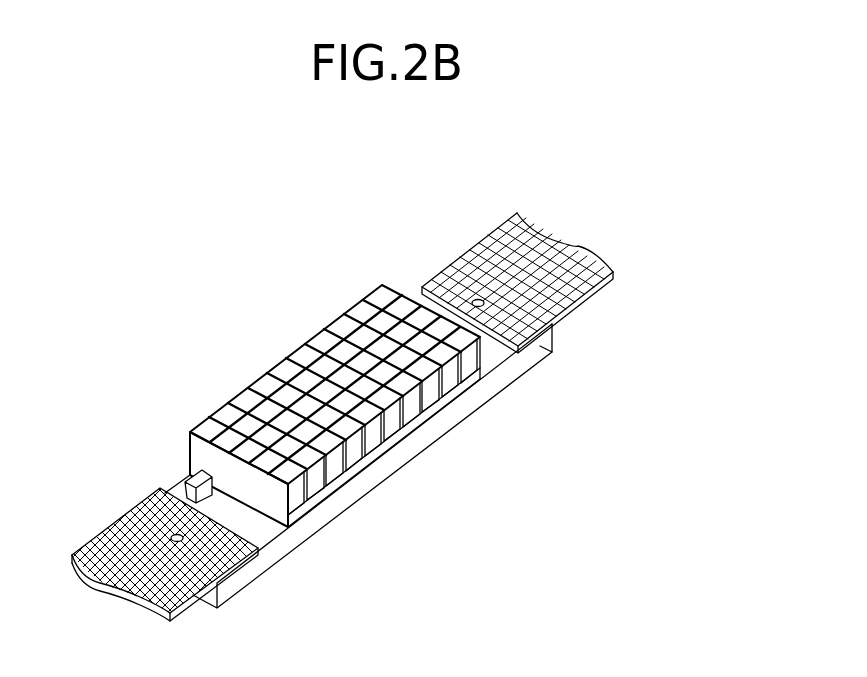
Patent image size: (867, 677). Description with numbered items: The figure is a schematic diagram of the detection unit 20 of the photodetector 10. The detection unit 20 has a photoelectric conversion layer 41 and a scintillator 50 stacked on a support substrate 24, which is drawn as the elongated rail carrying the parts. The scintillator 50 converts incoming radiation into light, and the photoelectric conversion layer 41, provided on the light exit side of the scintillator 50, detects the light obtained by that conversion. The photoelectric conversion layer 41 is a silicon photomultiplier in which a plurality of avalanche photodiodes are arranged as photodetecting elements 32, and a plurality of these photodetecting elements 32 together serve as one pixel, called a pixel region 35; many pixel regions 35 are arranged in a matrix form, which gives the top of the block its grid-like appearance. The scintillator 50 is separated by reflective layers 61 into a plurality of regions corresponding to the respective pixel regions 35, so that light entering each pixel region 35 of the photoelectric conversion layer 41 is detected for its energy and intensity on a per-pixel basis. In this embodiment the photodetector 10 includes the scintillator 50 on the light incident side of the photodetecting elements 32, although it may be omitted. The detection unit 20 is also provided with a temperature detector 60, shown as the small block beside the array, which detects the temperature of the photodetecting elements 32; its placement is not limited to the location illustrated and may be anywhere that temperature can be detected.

The photodetector 10 is at (710, 164).
The detection unit 20 is at (622, 260).
The support substrate 24 is at (530, 358).
The photodetecting elements 32 is at (457, 390).
The pixel region 35 is at (328, 330).
The photoelectric conversion layer 41 is at (358, 467).
The scintillator 50 is at (310, 498).
The temperature detector 60 is at (190, 472).
The reflective layers 61 is at (230, 393).